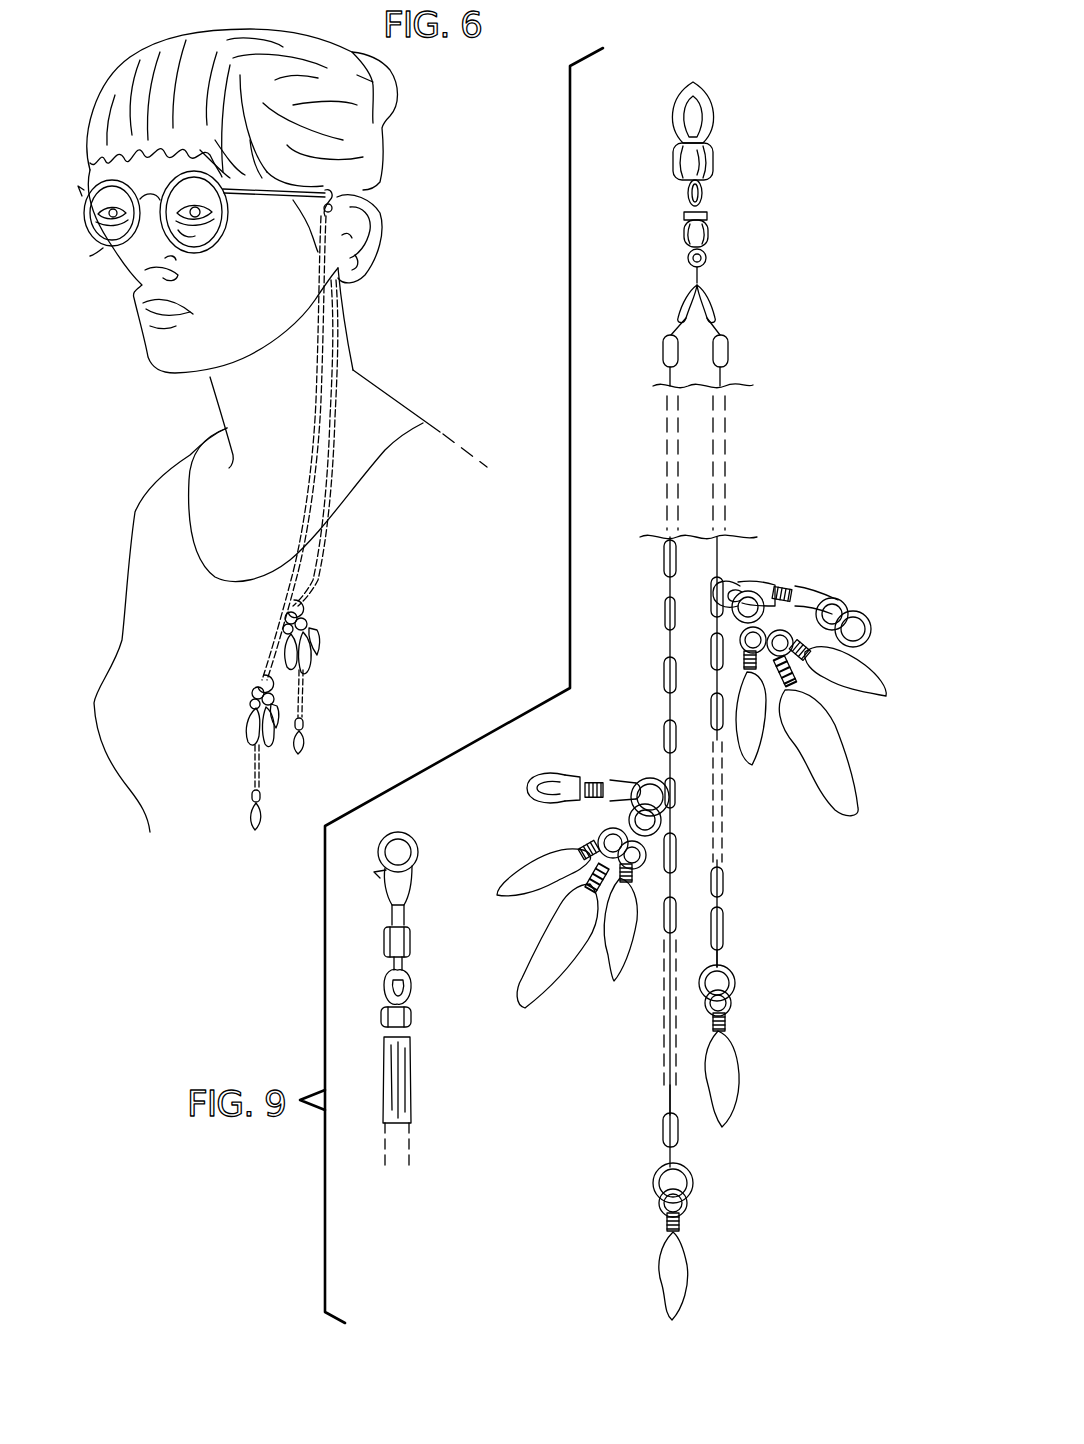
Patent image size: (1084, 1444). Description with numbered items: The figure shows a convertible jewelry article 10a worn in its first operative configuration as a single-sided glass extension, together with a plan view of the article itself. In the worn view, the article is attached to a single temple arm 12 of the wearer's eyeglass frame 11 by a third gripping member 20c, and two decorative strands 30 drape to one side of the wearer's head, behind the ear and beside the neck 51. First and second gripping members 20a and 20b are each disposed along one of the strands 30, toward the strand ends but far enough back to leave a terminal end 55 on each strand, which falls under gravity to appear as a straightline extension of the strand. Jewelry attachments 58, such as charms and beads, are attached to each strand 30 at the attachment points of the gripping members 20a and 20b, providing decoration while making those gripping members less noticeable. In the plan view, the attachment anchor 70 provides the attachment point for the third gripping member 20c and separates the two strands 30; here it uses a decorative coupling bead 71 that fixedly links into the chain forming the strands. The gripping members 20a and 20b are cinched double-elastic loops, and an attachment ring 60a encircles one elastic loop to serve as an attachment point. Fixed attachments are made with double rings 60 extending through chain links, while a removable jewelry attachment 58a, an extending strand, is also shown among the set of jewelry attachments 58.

In FIG. 6, the jewelry article 10a is at (333, 516).
In FIG. 6, the eyeglass frame 11 is at (103, 251).
In FIG. 6, the temple arm 12 is at (377, 192).
In FIG. 6, the first gripping member 20a is at (257, 688).
In FIG. 9, the first gripping member 20a is at (620, 758).
In FIG. 6, the second gripping member 20b is at (294, 609).
In FIG. 9, the second gripping member 20b is at (777, 578).
In FIG. 6, the third gripping member 20c is at (350, 232).
In FIG. 9, the third gripping member 20c is at (717, 163).
In FIG. 6, the decorative strands 30 is at (343, 356).
In FIG. 9, the decorative strands 30 is at (662, 352).
In FIG. 6, the neck 51 is at (358, 396).
In FIG. 6, the terminal end 55 is at (305, 686).
In FIG. 9, the terminal end 55 is at (722, 928).
In FIG. 6, the jewelry attachments 58 is at (331, 645).
In FIG. 9, the jewelry attachments 58 is at (849, 716).
In FIG. 9, the removable jewelry attachment 58a is at (411, 1086).
In FIG. 9, the double rings 60 is at (732, 606).
In FIG. 9, the attachment ring 60a is at (861, 605).
In FIG. 9, the attachment anchor 70 is at (720, 241).
In FIG. 9, the decorative coupling bead 71 is at (685, 238).